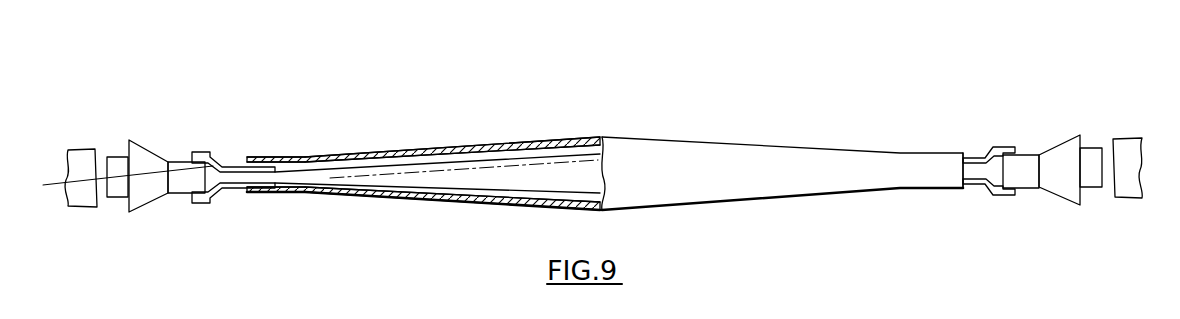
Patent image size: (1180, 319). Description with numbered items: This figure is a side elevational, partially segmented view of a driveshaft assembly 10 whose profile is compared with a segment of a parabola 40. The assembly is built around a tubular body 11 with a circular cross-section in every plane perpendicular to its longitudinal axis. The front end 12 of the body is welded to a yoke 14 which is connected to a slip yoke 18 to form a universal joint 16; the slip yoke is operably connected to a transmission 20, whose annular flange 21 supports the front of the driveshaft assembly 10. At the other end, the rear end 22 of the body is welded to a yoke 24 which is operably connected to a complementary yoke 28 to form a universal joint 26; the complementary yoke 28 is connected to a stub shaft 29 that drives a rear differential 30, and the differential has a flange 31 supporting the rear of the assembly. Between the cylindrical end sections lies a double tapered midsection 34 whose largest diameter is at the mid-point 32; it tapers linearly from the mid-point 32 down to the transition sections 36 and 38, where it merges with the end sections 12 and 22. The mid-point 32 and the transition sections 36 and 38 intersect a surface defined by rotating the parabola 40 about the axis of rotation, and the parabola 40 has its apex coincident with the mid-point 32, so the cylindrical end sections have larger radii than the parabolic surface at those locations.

The driveshaft assembly 10 is at (605, 131).
The tubular body 11 is at (520, 140).
The front end 12 is at (262, 160).
The yoke 14 is at (220, 167).
The universal joint 16 is at (193, 160).
The slip yoke 18 is at (175, 162).
The transmission 20 is at (76, 135).
The annular flange 21 is at (83, 157).
The rear end 22 is at (933, 152).
The yoke 24 is at (987, 143).
The universal joint 26 is at (1018, 150).
The complementary yoke 28 is at (1065, 188).
The stub shaft 29 is at (1097, 187).
The rear differential 30 is at (1131, 140).
The flange 31 is at (1110, 148).
The mid-point 32 is at (602, 137).
The double tapered midsection 34 is at (430, 150).
The transition section 36 is at (315, 160).
The transition section 38 is at (887, 153).
The parabola 40 is at (538, 137).